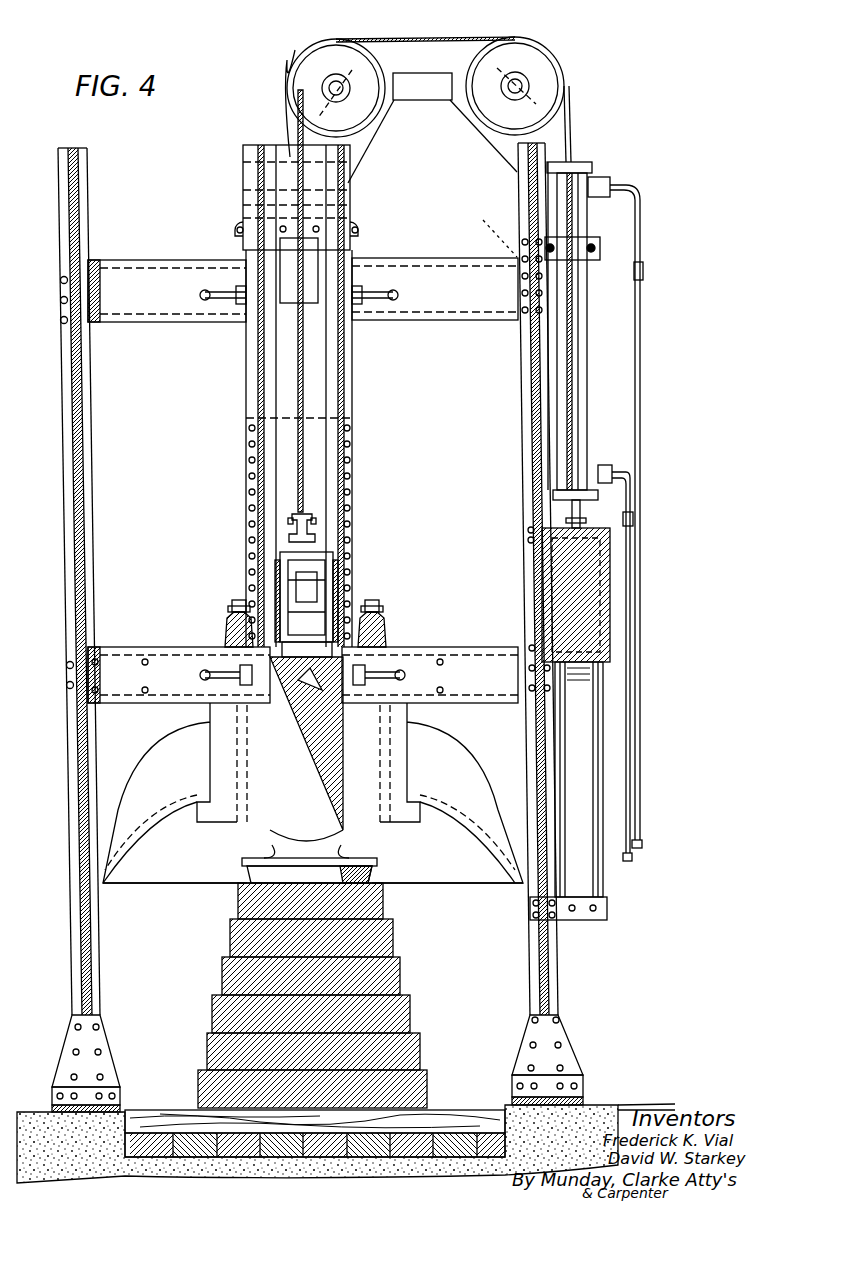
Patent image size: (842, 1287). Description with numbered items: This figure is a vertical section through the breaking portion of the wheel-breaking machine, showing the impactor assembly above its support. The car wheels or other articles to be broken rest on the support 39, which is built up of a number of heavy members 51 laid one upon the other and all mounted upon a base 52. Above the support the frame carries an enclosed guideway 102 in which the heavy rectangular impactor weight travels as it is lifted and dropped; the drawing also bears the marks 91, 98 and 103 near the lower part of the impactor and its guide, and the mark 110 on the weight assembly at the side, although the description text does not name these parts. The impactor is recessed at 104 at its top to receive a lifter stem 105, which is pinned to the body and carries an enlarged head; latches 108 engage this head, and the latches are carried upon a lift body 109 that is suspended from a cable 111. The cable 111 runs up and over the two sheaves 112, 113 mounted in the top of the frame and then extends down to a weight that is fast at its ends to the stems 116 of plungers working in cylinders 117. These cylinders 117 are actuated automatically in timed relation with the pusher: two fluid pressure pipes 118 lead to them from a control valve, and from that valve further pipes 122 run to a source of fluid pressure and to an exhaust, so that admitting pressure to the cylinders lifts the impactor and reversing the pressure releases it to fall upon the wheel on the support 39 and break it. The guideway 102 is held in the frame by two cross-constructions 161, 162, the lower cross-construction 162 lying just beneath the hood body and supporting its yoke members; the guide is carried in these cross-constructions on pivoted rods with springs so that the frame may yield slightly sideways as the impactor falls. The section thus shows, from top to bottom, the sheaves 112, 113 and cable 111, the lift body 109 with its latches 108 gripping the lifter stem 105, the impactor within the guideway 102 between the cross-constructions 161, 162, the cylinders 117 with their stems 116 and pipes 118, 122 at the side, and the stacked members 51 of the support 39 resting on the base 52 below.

The support 39 is at (395, 973).
The heavy members 51 is at (207, 1092).
The base 52 is at (357, 1128).
The hammer head 91 is at (345, 835).
The anvil cap 98 is at (282, 883).
The guideway 102 is at (354, 485).
The nut 103 is at (232, 636).
The recess 104 is at (141, 883).
The lifter stem 105 is at (330, 625).
The latches 108 is at (320, 582).
The lift body 109 is at (318, 534).
The counterweight 110 is at (608, 578).
The cable 111 is at (420, 33).
The sheave 112 is at (330, 48).
The sheave 113 is at (545, 48).
The plunger stems 116 is at (582, 519).
The cylinders 117 is at (586, 352).
The fluid pressure pipes 118 is at (633, 627).
The pipes 122 is at (307, 690).
The cross-construction 161 is at (454, 314).
The cross-construction 162 is at (481, 692).